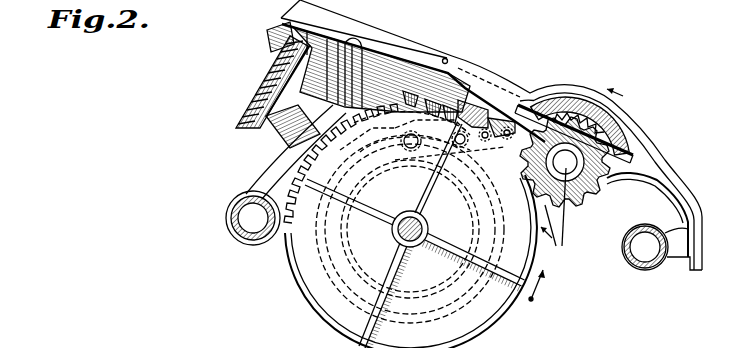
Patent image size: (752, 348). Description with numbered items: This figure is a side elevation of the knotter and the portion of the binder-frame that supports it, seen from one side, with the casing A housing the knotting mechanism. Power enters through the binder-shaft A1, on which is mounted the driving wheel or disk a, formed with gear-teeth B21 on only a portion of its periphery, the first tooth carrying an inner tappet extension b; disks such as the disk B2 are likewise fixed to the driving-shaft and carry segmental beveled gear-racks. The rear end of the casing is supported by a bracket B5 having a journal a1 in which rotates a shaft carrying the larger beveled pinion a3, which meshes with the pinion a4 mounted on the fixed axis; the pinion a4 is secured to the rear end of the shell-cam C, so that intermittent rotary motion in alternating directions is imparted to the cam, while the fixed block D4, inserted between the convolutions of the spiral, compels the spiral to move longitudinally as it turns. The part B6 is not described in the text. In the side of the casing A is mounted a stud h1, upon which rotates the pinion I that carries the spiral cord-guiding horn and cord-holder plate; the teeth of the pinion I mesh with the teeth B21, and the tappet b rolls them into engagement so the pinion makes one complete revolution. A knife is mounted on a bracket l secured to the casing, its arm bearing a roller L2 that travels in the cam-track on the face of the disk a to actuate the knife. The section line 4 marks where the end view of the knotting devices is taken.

The driving wheel or disk a is at (411, 230).
The tappet extension b is at (292, 222).
The binder-shaft A1 is at (429, 224).
The disk B2 is at (236, 226).
The bracket B5 is at (265, 178).
The shaft B6 is at (330, 109).
The gear-teeth B21 is at (422, 140).
The shell-cam C is at (418, 95).
The fixed block D4 is at (445, 90).
The journal a1 is at (293, 126).
The beveled pinion a3 is at (254, 90).
The pinion a4 is at (280, 54).
The bracket l is at (462, 110).
The projecting roller L2 is at (410, 151).
The casing A is at (568, 90).
The pinion I is at (590, 203).
The stud h1 is at (555, 217).
The section line 4 4 is at (569, 184).